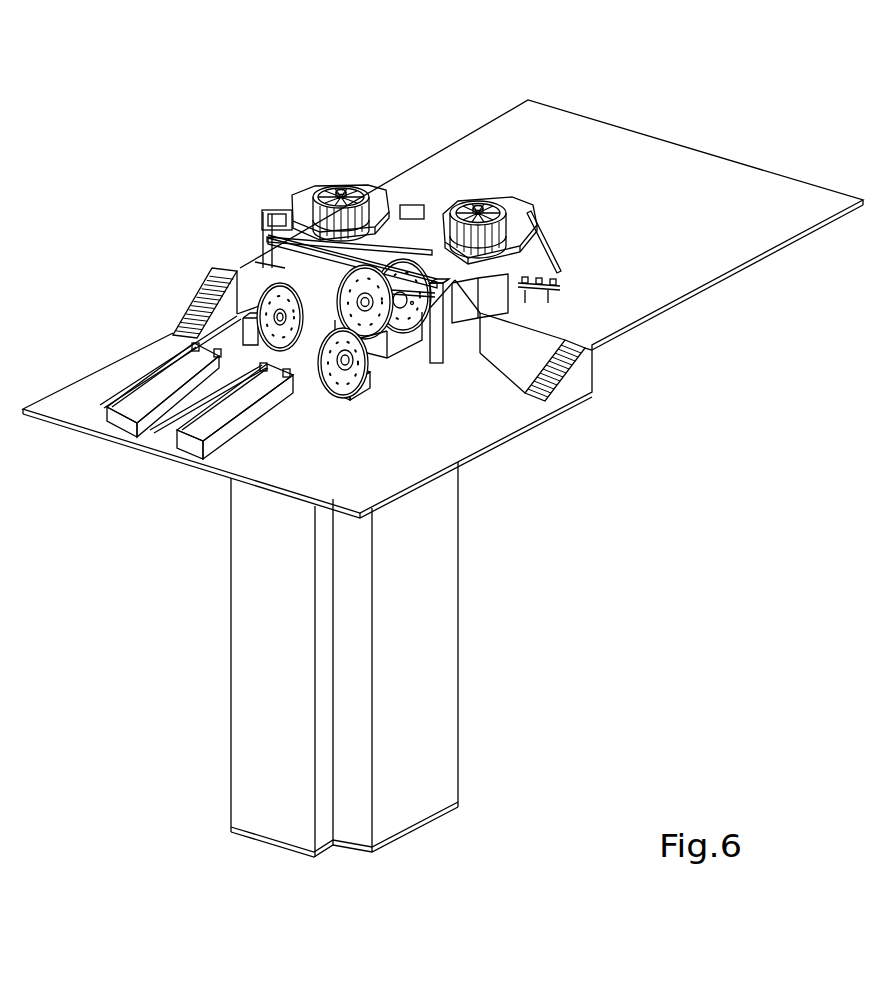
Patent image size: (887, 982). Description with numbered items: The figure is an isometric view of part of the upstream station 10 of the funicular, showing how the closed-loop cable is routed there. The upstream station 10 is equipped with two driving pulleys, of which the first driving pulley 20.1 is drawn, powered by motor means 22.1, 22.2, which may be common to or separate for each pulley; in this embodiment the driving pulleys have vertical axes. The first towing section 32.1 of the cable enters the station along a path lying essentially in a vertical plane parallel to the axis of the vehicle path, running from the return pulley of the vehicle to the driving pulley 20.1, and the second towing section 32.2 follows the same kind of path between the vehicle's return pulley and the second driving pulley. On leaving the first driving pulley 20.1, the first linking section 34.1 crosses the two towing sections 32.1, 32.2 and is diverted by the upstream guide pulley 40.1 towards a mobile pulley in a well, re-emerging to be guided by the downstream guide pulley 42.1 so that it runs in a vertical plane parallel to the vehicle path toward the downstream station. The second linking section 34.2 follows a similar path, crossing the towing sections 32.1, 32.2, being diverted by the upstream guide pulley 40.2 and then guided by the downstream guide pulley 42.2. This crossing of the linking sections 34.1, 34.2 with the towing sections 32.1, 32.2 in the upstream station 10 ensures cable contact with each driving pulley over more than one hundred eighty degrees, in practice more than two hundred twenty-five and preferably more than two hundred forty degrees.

The upstream station 10 is at (290, 157).
The first driving pulley 20.1 is at (528, 179).
The motor means 22.1 is at (488, 207).
The motor means 22.2 is at (343, 183).
The upstream guide pulley 40.1 is at (412, 303).
The upstream guide pulley 40.2 is at (383, 253).
The downstream guide pulley 42.1 is at (355, 348).
The downstream guide pulley 42.2 is at (273, 293).
The first towing section 32.1 is at (186, 417).
The second towing section 32.2 is at (143, 405).
The first linking section 34.1 is at (224, 411).
The second linking section 34.2 is at (120, 398).